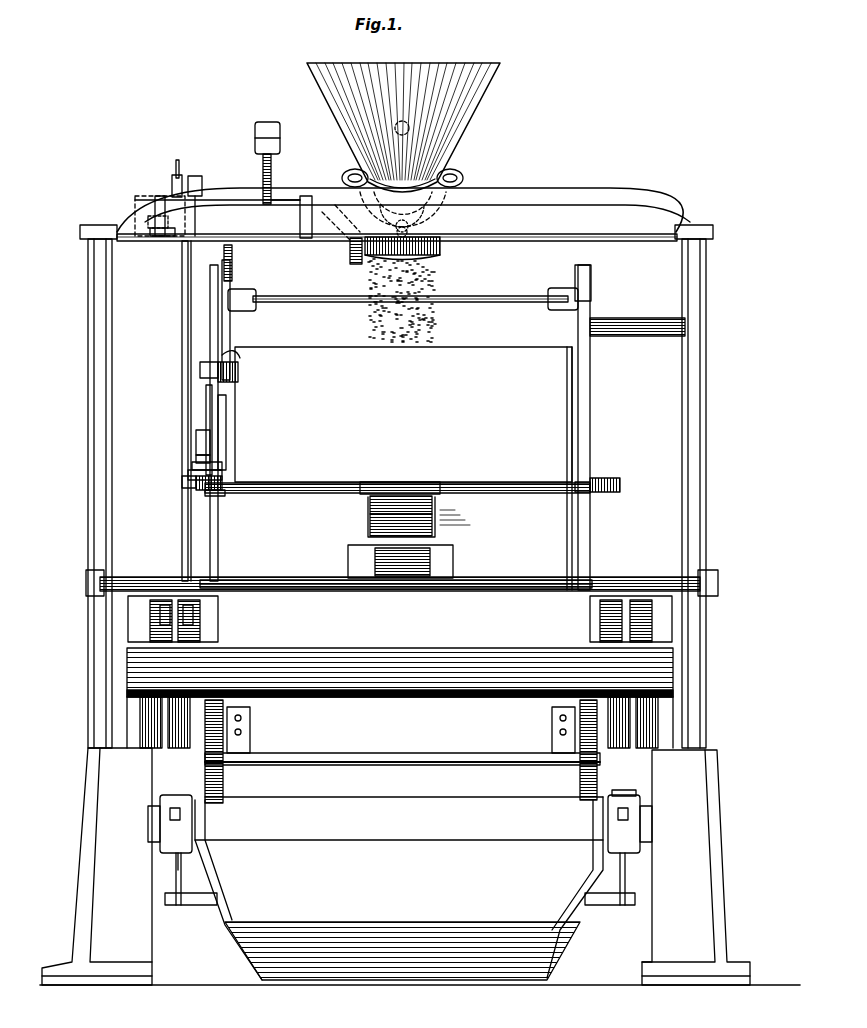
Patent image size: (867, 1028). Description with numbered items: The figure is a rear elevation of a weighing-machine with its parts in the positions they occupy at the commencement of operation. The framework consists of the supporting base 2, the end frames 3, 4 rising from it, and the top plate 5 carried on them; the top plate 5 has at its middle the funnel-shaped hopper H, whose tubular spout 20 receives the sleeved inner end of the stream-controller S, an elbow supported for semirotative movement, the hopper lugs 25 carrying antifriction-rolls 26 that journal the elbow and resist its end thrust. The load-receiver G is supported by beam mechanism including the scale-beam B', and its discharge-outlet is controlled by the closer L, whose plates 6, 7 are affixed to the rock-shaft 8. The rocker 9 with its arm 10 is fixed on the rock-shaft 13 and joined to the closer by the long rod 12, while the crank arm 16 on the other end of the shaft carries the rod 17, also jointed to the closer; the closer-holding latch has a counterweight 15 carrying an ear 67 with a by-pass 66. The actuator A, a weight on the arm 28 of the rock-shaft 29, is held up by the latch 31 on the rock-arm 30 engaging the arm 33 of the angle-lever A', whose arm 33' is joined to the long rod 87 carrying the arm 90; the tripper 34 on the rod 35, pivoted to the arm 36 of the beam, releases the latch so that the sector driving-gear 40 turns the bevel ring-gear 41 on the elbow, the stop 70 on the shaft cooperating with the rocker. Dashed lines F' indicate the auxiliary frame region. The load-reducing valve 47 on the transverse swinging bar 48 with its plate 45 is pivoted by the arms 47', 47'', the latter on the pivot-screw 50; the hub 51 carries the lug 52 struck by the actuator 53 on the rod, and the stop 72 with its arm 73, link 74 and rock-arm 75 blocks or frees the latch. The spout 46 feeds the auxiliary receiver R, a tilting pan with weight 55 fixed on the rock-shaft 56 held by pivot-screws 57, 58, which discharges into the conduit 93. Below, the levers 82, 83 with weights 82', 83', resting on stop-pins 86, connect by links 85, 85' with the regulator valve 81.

The hopper H is at (473, 110).
The antifriction-roll 26 is at (395, 126).
The lugs 25 is at (356, 170).
The tubular spout 20 is at (436, 200).
The bevel ring-gear 41 is at (430, 218).
The stream-controller S is at (438, 255).
The driving-gear 40 is at (356, 264).
The feed link F' is at (338, 229).
The top plate 5 is at (580, 196).
The rock-shaft 29 is at (285, 241).
The end frame 3 is at (90, 488).
The end frame 4 is at (706, 492).
The supporting base 2 is at (80, 822).
The actuator A is at (258, 163).
The arm 28 is at (275, 200).
The arm 33 is at (206, 209).
The angle-lever A' is at (150, 203).
The rock-arm 30 is at (202, 180).
The latch 31 is at (176, 175).
The tripping device 34 is at (178, 160).
The arm 33' is at (149, 242).
The rod 35 is at (182, 276).
The long rod 87 is at (190, 298).
The stop 70 is at (232, 252).
The long rod 12 is at (210, 340).
The rock-shaft 13 is at (278, 296).
The rocker 9 is at (222, 322).
The counterweight 15 is at (222, 357).
The ear 67 is at (200, 368).
The by-pass 66 is at (218, 382).
The arm 10 is at (206, 400).
The stop 72 is at (226, 420).
The arm 73 is at (196, 440).
The link 74 is at (196, 458).
The rock-arm 75 is at (192, 466).
The actuator 53 is at (188, 474).
The lug 52 is at (182, 484).
The hub 51 is at (196, 490).
The arm 47' is at (187, 508).
The load-receiver G is at (403, 468).
The transverse swinging bar 48 is at (300, 483).
The plate 45 is at (358, 482).
The valve 47 is at (404, 485).
The spout 46 is at (368, 512).
The weight 55 is at (375, 552).
The auxiliary receiver R is at (396, 568).
The conduit 93 is at (460, 588).
The rock-shaft 56 is at (290, 577).
The pivot-screw 57 is at (86, 586).
The pivot-screw 58 is at (718, 584).
The arm 36 is at (150, 630).
The arm 90 is at (190, 612).
The scale-beam B' is at (400, 659).
The plate 6 is at (205, 722).
The plate 7 is at (580, 780).
The closer L is at (345, 765).
The rock-shaft 8 is at (412, 765).
The valve 81 is at (368, 922).
The lever 82 is at (148, 823).
The stop-pin 86 is at (148, 838).
The weight 82' is at (141, 866).
The link 85 is at (162, 880).
The lever 83 is at (647, 819).
The weight 83' is at (651, 779).
The link 85' is at (638, 879).
The crank arm 16 is at (591, 280).
The rod 17 is at (590, 370).
The pivot-screw 50 is at (605, 478).
The arm 47'' is at (607, 489).